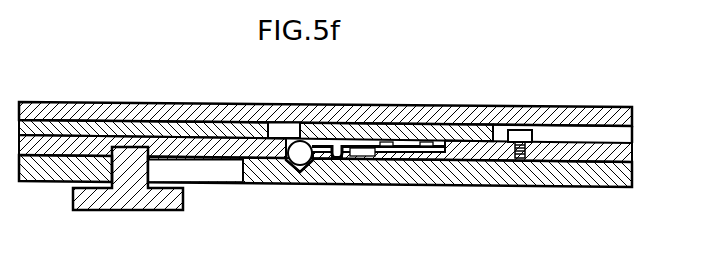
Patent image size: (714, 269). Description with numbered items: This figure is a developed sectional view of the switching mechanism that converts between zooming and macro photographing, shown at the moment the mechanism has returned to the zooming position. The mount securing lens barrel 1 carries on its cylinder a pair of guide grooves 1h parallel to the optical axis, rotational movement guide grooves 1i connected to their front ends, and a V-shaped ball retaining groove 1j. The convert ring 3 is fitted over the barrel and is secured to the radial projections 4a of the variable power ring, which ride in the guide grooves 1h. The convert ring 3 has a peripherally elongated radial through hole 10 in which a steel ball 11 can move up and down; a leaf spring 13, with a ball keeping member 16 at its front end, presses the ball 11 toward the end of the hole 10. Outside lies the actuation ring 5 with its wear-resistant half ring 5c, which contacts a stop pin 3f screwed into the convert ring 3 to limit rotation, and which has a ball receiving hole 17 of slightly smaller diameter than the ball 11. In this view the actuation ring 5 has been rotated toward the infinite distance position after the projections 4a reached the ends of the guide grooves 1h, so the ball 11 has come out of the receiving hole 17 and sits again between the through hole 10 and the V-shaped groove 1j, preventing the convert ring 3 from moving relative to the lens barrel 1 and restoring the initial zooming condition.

The mount securing lens barrel 1 is at (610, 188).
The guide grooves 1h is at (90, 199).
The guide grooves 1i is at (214, 176).
The ball retaining groove 1j is at (289, 174).
The convert ring 3 is at (634, 156).
The stop pin 3f is at (520, 130).
The radial projections 4a is at (128, 183).
The actuation ring 5 is at (607, 108).
The half ring 5c is at (471, 128).
The radial through hole 10 is at (292, 125).
The steel ball 11 is at (309, 104).
The leaf spring 13 is at (364, 160).
The ball keeping member 16 is at (311, 170).
The ball receiving hole 17 is at (273, 125).